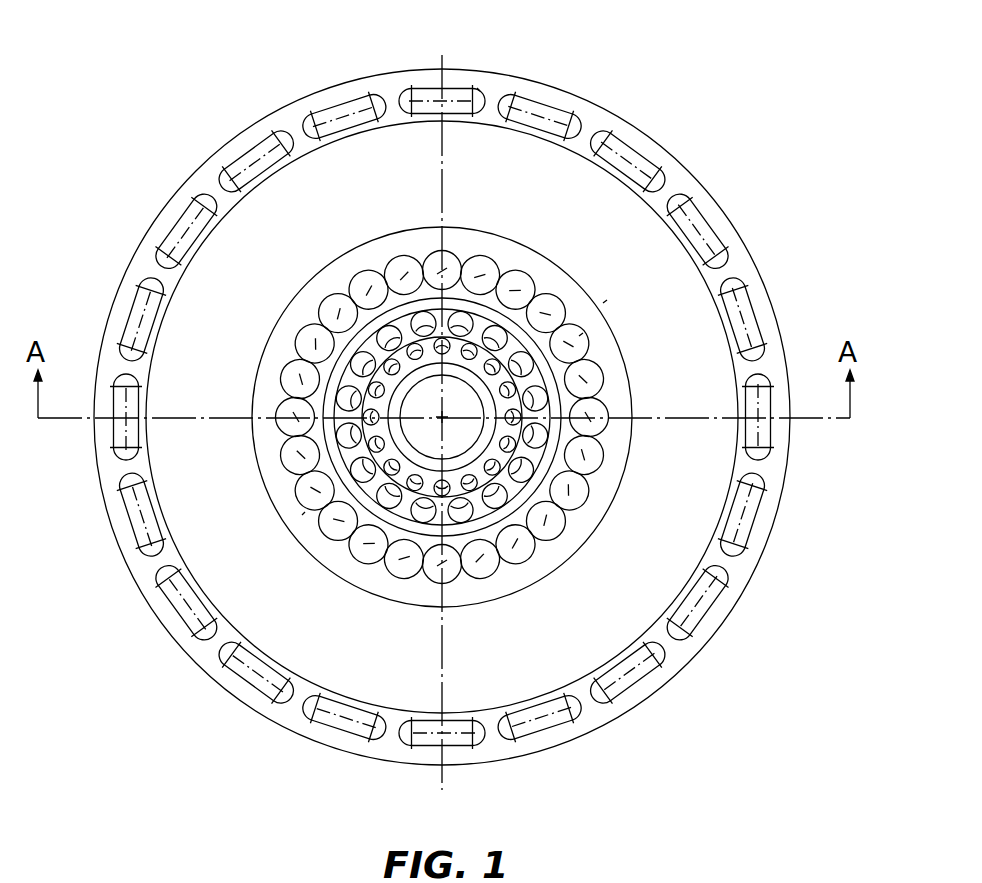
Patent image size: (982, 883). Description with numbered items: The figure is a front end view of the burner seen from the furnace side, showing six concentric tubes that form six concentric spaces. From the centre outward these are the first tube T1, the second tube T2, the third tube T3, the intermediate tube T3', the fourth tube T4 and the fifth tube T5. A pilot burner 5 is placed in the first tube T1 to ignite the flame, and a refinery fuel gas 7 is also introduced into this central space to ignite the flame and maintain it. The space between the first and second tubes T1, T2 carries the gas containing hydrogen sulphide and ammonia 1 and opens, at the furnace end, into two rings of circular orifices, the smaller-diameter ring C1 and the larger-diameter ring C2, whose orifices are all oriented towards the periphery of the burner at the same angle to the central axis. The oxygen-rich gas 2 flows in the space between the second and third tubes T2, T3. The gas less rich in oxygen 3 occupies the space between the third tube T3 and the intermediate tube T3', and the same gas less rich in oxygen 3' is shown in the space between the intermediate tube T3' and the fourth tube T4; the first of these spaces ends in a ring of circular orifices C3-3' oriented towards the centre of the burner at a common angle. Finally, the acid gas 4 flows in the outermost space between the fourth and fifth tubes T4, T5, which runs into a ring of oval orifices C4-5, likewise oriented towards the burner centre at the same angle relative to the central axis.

The gas containing hydrogen sulphide and ammonia 1 is at (472, 455).
The oxygen-rich gas 2 is at (455, 302).
The gas less rich in oxygen 3 is at (466, 417).
The tube chamber 3' is at (667, 240).
The acid gas 4 is at (648, 168).
The pilot burner 5 is at (483, 460).
The refinery fuel gas 7 is at (453, 443).
The first tube T1 is at (378, 418).
The second tube T2 is at (357, 390).
The third tube T3 is at (389, 346).
The intermediate tube T3' is at (412, 327).
The fourth tube T4 is at (340, 252).
The fifth tube T5 is at (387, 72).
The ring of orifices of smaller diameter C1 is at (357, 453).
The ring of orifices of larger diameter C2 is at (383, 510).
The ring of orifices C3-3' is at (227, 606).
The ring of orifices C4-5 is at (477, 88).